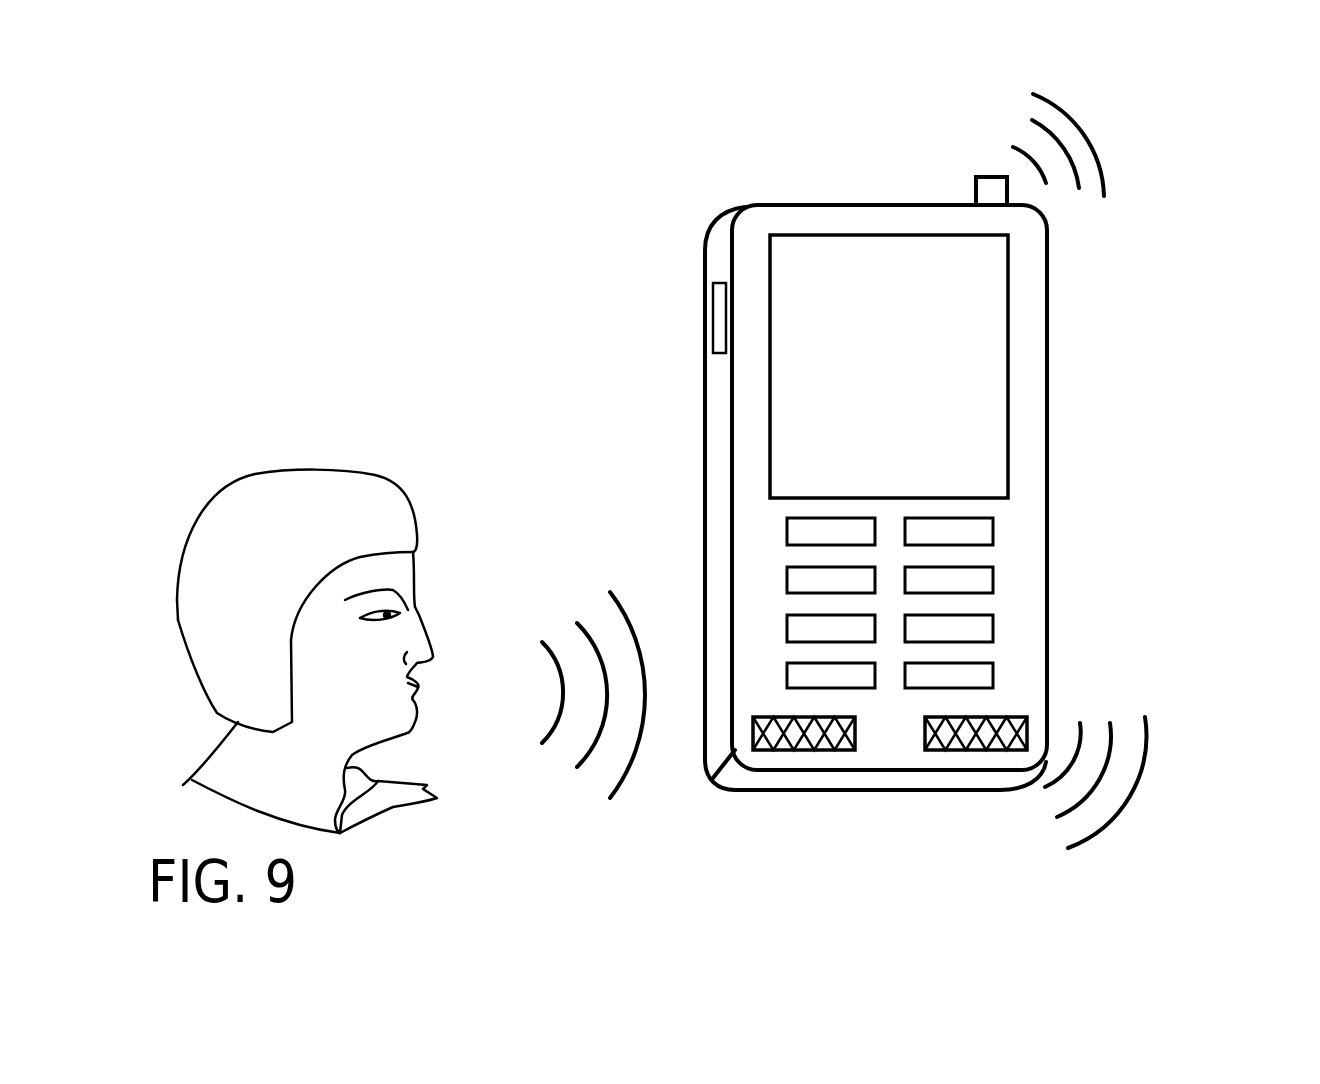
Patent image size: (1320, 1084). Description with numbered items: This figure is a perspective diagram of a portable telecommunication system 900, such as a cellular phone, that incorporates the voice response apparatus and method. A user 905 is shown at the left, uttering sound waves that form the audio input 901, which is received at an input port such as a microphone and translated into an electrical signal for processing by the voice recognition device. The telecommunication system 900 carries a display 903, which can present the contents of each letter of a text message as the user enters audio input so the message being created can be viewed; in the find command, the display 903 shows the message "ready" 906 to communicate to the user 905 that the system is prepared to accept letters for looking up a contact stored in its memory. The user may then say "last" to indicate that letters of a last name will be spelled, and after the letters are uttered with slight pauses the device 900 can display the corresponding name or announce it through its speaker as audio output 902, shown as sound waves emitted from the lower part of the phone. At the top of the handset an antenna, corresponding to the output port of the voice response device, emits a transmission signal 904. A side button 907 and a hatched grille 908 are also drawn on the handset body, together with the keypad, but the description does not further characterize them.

The telecommunication system 900 is at (603, 148).
The audio input 901 is at (588, 822).
The audio output 902 is at (1093, 857).
The display 903 is at (978, 452).
The transmission signal 904 is at (1125, 175).
The user 905 is at (223, 455).
The message "ready" 906 is at (952, 293).
The side button 907 is at (703, 310).
The microphone / speaker grille 908 is at (867, 750).